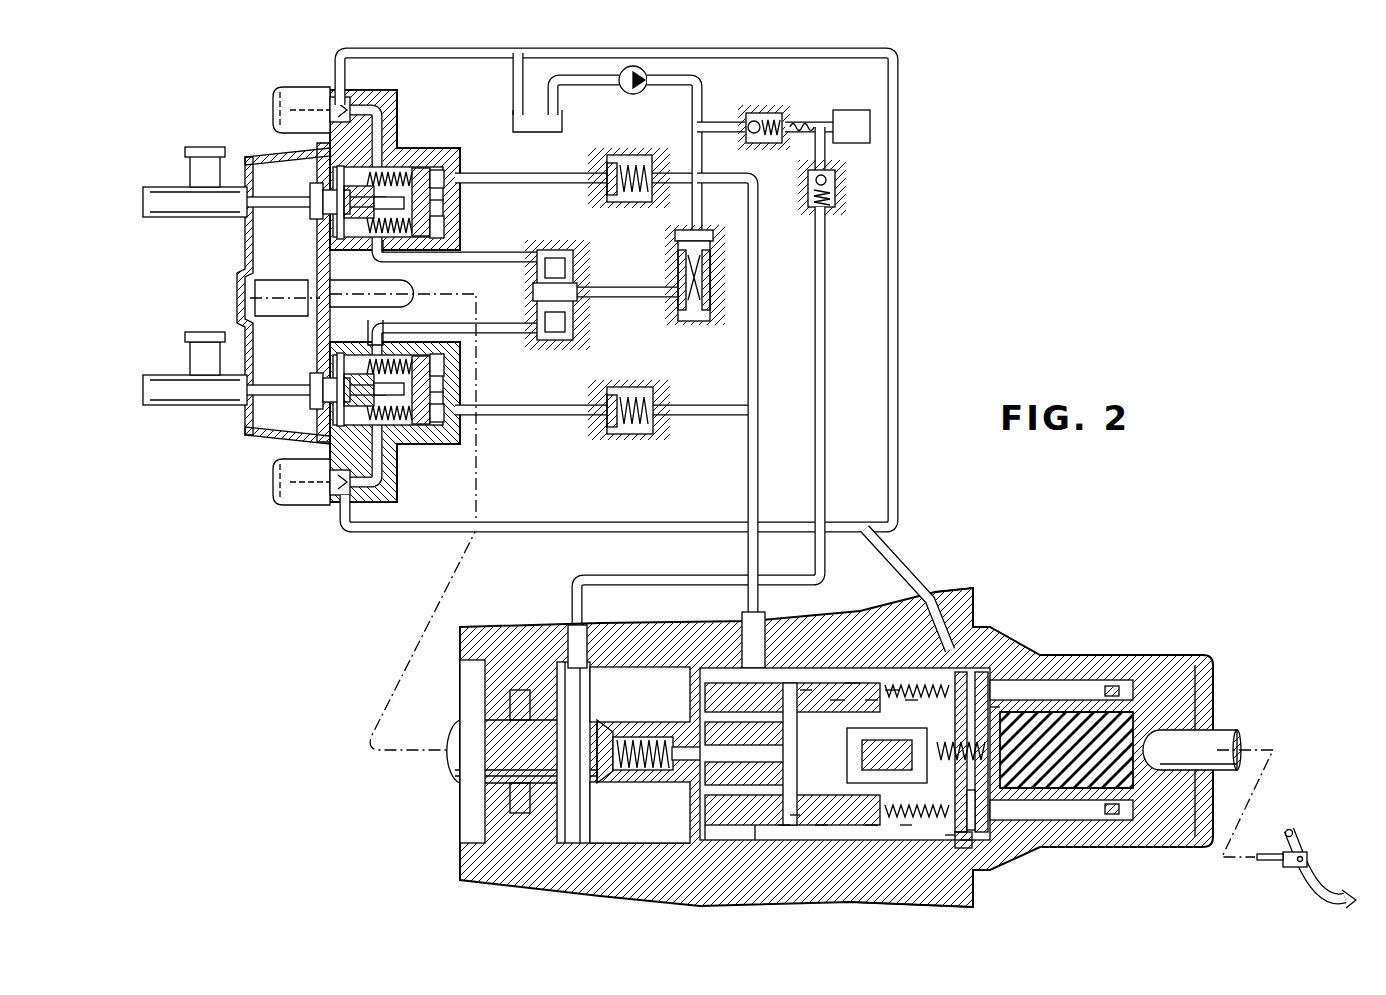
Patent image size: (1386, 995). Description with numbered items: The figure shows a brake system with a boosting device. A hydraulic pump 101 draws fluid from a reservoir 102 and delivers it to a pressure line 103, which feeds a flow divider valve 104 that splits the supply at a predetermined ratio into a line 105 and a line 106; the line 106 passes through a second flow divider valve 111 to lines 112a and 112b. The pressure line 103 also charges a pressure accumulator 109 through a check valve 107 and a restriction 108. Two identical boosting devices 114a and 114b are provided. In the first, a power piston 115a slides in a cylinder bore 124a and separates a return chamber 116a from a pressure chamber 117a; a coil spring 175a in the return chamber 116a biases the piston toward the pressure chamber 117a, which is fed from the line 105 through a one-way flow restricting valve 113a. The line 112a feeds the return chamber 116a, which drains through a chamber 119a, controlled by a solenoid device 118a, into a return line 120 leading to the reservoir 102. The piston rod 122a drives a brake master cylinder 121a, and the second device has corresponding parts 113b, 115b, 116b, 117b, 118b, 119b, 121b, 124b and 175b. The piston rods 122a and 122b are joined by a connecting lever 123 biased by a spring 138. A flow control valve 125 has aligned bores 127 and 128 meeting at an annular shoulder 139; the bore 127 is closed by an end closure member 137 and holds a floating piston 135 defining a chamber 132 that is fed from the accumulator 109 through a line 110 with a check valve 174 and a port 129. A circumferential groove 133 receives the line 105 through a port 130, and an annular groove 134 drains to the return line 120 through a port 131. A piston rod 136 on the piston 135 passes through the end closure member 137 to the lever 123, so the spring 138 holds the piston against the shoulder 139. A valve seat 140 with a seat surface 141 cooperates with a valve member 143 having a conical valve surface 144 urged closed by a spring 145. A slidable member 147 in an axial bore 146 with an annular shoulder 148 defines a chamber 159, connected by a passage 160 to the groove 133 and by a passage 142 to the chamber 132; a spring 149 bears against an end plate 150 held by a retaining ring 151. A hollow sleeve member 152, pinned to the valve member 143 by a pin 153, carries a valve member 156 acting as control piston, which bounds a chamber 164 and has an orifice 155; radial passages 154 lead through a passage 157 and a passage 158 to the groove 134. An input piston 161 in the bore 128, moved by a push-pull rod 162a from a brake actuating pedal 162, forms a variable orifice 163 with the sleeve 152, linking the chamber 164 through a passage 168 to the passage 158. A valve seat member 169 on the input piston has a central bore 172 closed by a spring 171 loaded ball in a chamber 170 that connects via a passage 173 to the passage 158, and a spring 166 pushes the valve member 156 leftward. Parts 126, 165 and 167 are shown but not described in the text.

The hydraulic pump 101 is at (638, 93).
The reservoir 102 is at (563, 124).
The pressure line 103 is at (699, 96).
The flow divider valve 104 is at (712, 228).
The line 105 is at (760, 290).
The line 106 is at (625, 291).
The check valve 107 is at (770, 100).
The restriction 108 is at (800, 122).
The pressure accumulator 109 is at (857, 110).
The line 110 is at (827, 290).
The second flow divider valve 111 is at (580, 250).
The line 112a is at (486, 257).
The line 112b is at (466, 323).
The one-way flow restricting valve 113a is at (589, 161).
The check valve 113b is at (634, 375).
The first boosting device 114a is at (413, 112).
The boosting device 114b is at (409, 462).
The power piston 115a is at (432, 170).
The valve seat 115b is at (448, 355).
The return chamber 116a is at (402, 170).
The spring 116b is at (403, 421).
The pressure chamber 117a is at (446, 178).
The outlet port 117b is at (446, 396).
The solenoid device 118a is at (286, 82).
The cylinder 118b is at (273, 483).
The chamber 119a is at (327, 100).
The plug 119b is at (333, 495).
The return line 120 is at (898, 290).
The brake master cylinder 121a is at (162, 194).
The push rod 121b is at (162, 378).
The piston rod 122a is at (284, 197).
The piston rod 122b is at (287, 384).
The connecting lever 123 is at (318, 238).
The cylinder bore 124a is at (445, 222).
The valve member 124b is at (446, 375).
The flow control valve 125 is at (1067, 645).
The servo housing 126 is at (1101, 655).
The bore 127 is at (655, 835).
The bore 128 is at (1078, 847).
The port 129 is at (575, 624).
The port 130 is at (752, 612).
The port 131 is at (948, 598).
The chamber 132 is at (652, 697).
The circumferential groove 133 is at (820, 683).
The annular groove 134 is at (975, 640).
The floating piston 135 is at (820, 831).
The piston rod 136 is at (413, 300).
The end closure member 137 is at (540, 832).
The spring 138 is at (297, 318).
The annular shoulder 139 is at (976, 840).
The valve seat 140 is at (760, 830).
The seat surface 141 is at (712, 830).
The passage 142 is at (700, 712).
The valve member 143 is at (665, 771).
The conical valve surface 144 is at (688, 797).
The spring 145 is at (628, 771).
The axial bore 146 is at (930, 870).
The slidable member 147 is at (870, 831).
The annular shoulder 148 is at (782, 831).
The spring 149 is at (976, 660).
The end plate 150 is at (986, 690).
The retaining ring 151 is at (981, 680).
The hollow sleeve member 152 is at (905, 831).
The pin 153 is at (805, 690).
The radial passages 154 is at (850, 683).
The orifice 155 is at (838, 700).
The valve member 156 is at (884, 790).
The passage 157 is at (870, 700).
The passage 158 is at (910, 700).
The chamber 159 is at (795, 822).
The passage 160 is at (790, 683).
The input piston 161 is at (1180, 826).
The brake actuating pedal 162 is at (1300, 886).
The push-pull rod 162a is at (1223, 732).
The variable orifice 163 is at (890, 690).
The chamber 164 is at (925, 820).
The spring 165 is at (845, 826).
The spring 166 is at (965, 846).
The retainer 167 is at (982, 796).
The passage 168 is at (950, 840).
The valve seat member 169 is at (1040, 784).
The chamber 170 is at (996, 768).
The spring 171 is at (1006, 758).
The central bore 172 is at (1028, 722).
The passage 173 is at (1015, 741).
The check valve 174 is at (829, 206).
The coil spring 175a is at (400, 250).
The passage 175b is at (370, 340).